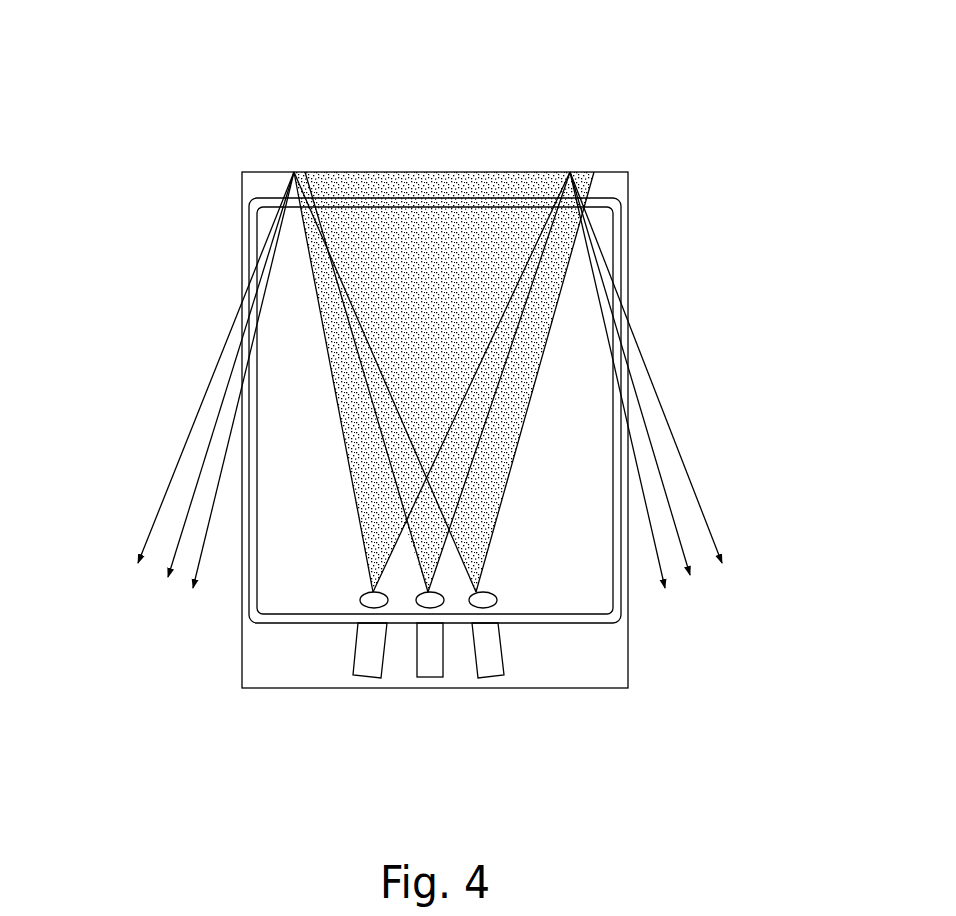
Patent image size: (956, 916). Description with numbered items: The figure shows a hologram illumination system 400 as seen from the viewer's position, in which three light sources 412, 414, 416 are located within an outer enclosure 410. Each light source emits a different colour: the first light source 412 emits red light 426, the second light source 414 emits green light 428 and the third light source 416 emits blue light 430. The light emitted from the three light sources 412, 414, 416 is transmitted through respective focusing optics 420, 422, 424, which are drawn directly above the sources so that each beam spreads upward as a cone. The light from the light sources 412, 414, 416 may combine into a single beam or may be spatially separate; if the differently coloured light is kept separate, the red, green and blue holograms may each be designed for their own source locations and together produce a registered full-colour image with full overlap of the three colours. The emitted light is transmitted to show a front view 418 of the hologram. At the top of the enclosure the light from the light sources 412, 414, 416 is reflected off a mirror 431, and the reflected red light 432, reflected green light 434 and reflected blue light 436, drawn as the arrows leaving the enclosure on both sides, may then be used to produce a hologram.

The hologram illumination system 400 is at (580, 95).
The outer enclosure 410 is at (630, 652).
The first light source 412 is at (370, 665).
The second light source 414 is at (429, 660).
The third light source 416 is at (490, 663).
The front view of the hologram 418 is at (288, 625).
The focusing optics 420 is at (368, 600).
The focusing optics 422 is at (440, 603).
The focusing optics 424 is at (488, 600).
The red light 426 is at (362, 490).
The green light 428 is at (453, 171).
The blue light 430 is at (497, 455).
The mirror 431 is at (322, 171).
The reflected red light 432 is at (215, 483).
The reflected green light 434 is at (218, 408).
The reflected blue light 436 is at (152, 523).